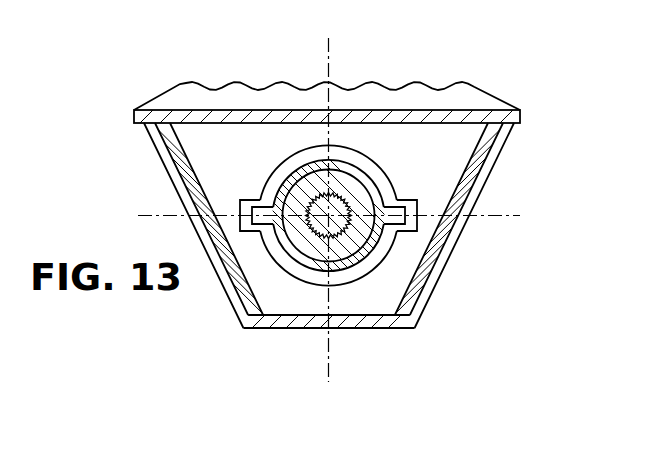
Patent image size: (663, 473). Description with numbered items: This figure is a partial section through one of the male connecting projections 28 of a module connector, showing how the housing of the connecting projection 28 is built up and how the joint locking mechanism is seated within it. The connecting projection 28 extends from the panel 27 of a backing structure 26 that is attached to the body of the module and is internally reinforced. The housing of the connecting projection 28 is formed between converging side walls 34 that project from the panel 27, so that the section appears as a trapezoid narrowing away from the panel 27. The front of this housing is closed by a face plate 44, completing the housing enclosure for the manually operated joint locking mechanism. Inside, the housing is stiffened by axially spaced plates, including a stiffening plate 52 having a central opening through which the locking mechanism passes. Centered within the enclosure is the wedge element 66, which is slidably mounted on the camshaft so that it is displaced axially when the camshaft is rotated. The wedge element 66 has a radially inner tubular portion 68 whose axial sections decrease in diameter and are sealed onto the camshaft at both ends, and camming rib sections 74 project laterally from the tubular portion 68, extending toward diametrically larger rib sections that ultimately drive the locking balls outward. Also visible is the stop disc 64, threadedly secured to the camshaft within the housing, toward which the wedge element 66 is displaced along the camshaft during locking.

The backing structure 26 is at (483, 103).
The panel 27 is at (243, 118).
The connecting projection 28 is at (497, 276).
The converging side walls 34 is at (480, 157).
The face plate 44 is at (390, 322).
The stiffening plate 52 is at (413, 243).
The stop disc 64 is at (372, 178).
The wedge element 66 is at (350, 278).
The radially inner tubular portion 68 is at (305, 268).
The camming rib sections 74 is at (243, 233).